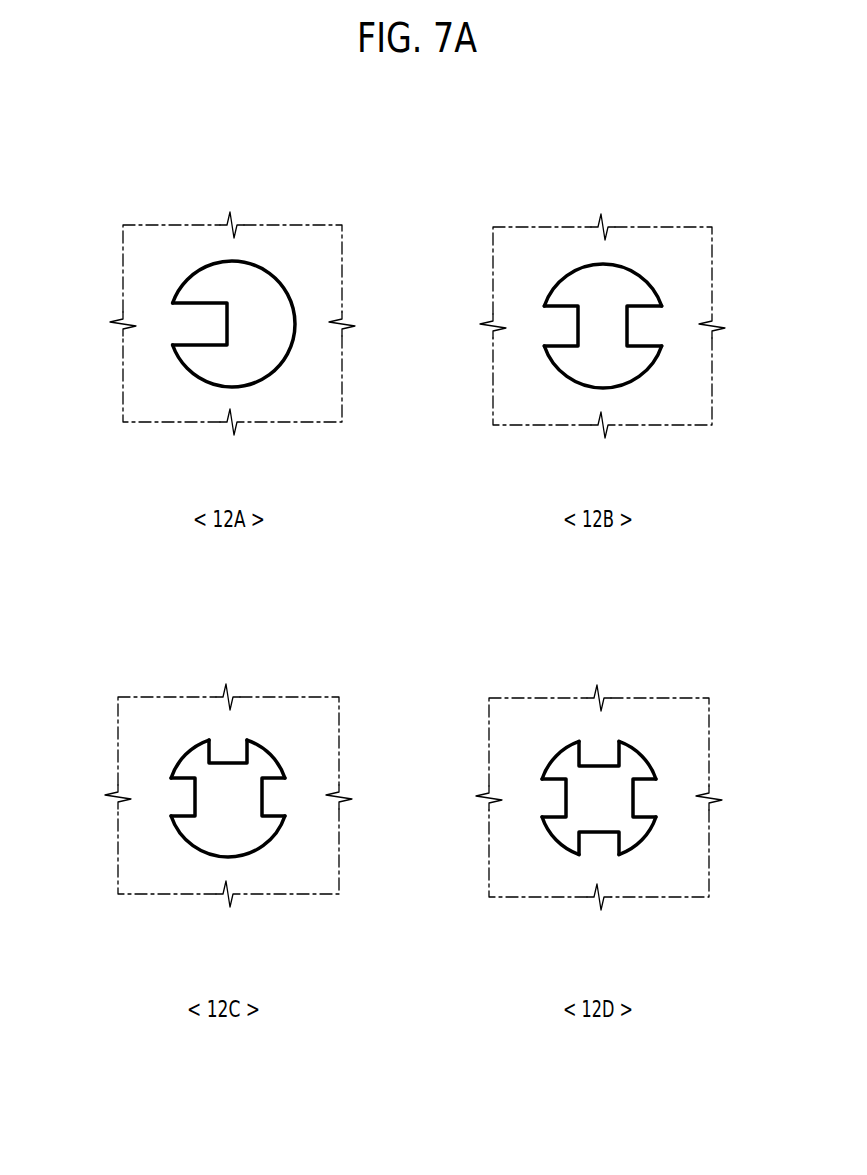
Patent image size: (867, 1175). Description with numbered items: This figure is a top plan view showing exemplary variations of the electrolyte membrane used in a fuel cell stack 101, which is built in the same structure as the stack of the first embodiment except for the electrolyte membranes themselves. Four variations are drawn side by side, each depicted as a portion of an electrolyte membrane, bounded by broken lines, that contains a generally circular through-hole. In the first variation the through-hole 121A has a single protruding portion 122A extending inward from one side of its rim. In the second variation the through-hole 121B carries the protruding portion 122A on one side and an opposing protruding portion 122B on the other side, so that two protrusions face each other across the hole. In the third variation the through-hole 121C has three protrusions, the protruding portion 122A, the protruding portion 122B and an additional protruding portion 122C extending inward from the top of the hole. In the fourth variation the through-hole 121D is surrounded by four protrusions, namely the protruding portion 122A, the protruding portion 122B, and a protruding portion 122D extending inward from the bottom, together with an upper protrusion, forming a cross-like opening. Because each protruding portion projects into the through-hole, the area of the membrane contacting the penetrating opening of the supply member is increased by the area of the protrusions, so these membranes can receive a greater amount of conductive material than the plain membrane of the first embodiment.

The fuel cell stack 101 is at (438, 138).
The through-hole 121A is at (268, 347).
The protruding portion 122A is at (188, 327).
The through-hole 121B is at (617, 366).
The protruding portion 122B is at (652, 327).
The through-hole 121C is at (246, 843).
The protruding portion 122C is at (218, 748).
The through-hole 121D is at (615, 810).
The protruding portion 122D is at (591, 855).